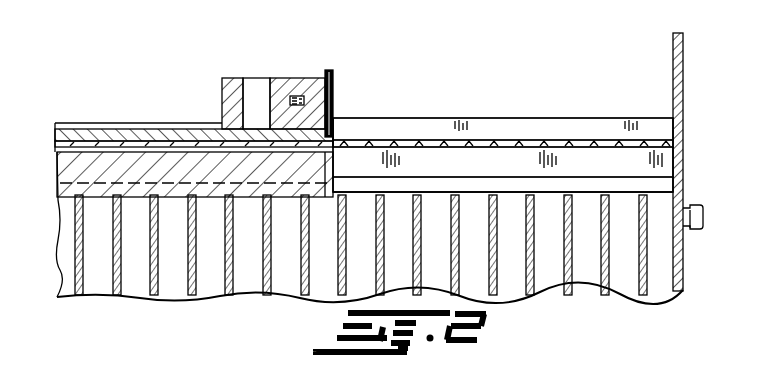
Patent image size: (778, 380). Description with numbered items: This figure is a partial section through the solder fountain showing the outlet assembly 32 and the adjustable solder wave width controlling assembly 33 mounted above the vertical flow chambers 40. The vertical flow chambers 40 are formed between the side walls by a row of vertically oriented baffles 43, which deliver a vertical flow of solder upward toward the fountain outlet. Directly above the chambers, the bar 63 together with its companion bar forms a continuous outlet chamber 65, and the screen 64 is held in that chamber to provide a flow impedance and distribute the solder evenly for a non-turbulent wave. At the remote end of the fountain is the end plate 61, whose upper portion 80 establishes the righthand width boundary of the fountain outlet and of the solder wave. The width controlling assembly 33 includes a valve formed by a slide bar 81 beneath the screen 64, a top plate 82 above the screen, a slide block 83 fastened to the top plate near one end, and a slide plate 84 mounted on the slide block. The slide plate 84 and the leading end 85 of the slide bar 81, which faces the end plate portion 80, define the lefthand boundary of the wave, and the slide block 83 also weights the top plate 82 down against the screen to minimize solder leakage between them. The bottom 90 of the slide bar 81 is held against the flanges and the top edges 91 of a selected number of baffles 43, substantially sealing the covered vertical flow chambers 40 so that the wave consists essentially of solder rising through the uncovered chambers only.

The outlet assembly 32 is at (495, 95).
The adjustable solder wave width controlling assembly 33 is at (343, 84).
The vertical flow chambers 40 is at (548, 277).
The baffles 43 is at (346, 262).
The end plate 61 is at (683, 168).
The bar 63 is at (603, 126).
The screen 64 is at (573, 139).
The outlet chamber 65 is at (487, 161).
The upper portion of the end plate 80 is at (673, 50).
The slide bar 81 is at (90, 160).
The top plate 82 is at (137, 140).
The slide block 83 is at (222, 90).
The slide plate 84 is at (328, 70).
The leading end of the slide bar 85 is at (336, 147).
The bottom of the slide bar 90 is at (287, 199).
The top edges of the baffles 91 is at (342, 193).